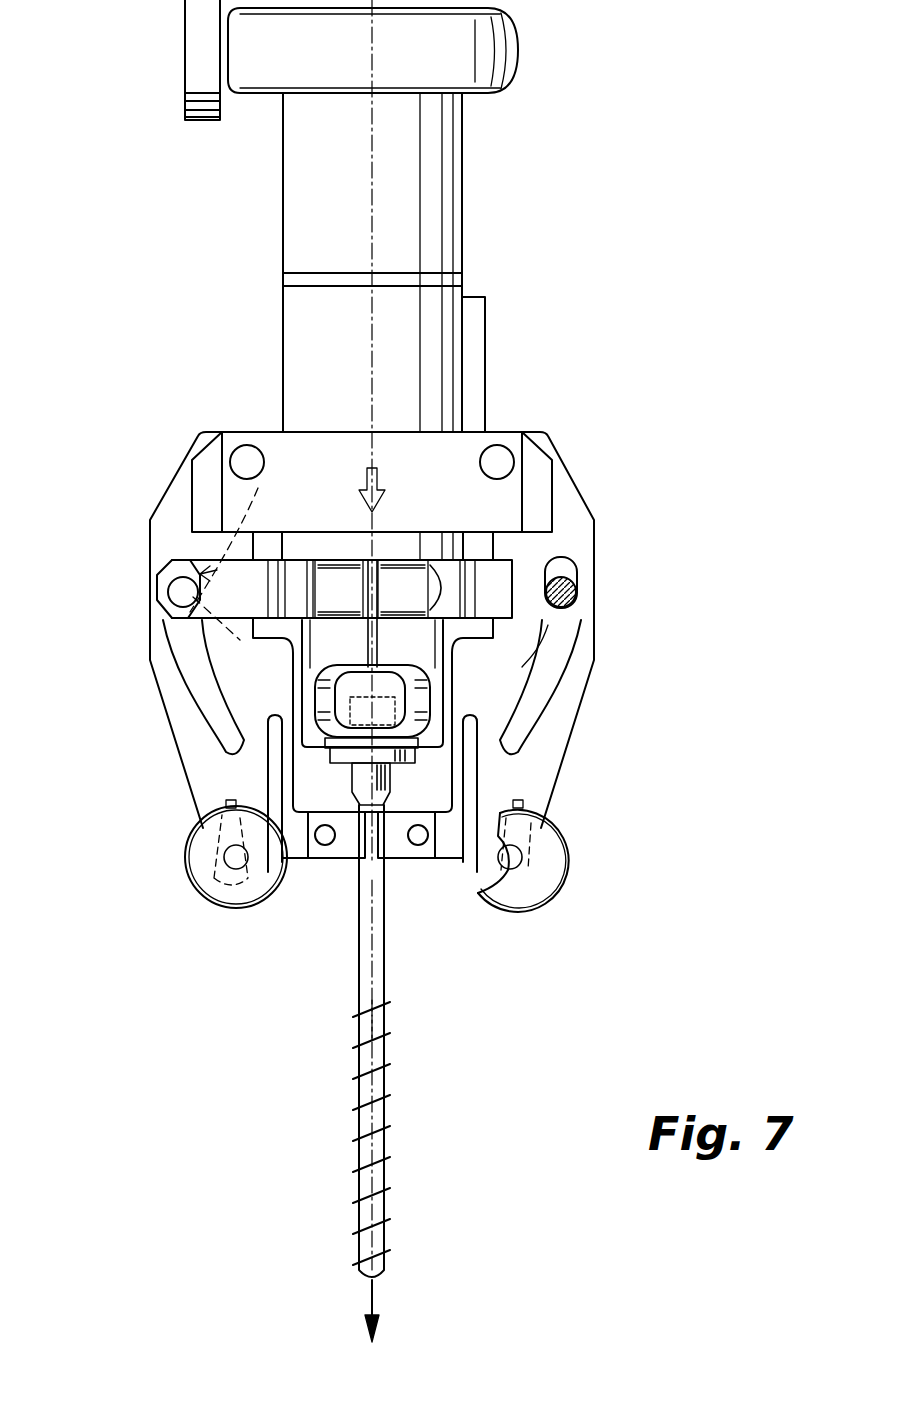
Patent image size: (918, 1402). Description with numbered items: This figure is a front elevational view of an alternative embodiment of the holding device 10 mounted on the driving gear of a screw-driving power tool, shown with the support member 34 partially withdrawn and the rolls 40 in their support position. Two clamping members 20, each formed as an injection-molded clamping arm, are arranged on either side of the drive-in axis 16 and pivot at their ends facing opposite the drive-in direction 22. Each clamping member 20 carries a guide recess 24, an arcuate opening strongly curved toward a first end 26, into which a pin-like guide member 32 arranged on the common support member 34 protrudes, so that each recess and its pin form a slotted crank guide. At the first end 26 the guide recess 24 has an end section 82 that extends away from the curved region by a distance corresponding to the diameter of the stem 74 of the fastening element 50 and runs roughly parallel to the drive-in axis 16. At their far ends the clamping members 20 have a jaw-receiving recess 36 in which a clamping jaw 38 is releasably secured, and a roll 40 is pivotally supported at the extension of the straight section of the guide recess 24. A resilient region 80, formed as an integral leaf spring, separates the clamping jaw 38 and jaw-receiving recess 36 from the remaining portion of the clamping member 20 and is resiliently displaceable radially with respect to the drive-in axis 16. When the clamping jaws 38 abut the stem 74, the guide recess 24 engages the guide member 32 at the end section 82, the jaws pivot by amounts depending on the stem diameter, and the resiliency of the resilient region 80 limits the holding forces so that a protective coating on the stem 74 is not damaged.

The holding device 10 is at (605, 399).
The drive-in axis 16 is at (388, 1020).
The clamping member 20 is at (597, 652).
The drive-in direction 22 is at (375, 1296).
The guide recess 24 is at (530, 664).
The end of guide recess 26 is at (183, 558).
The guide member 32 is at (180, 594).
The support member 34 is at (482, 588).
The jaw-receiving recess 36 is at (440, 862).
The clamping jaw 38 is at (348, 852).
The roll 40 is at (237, 895).
The fastening element 50 is at (388, 1112).
The stem 74 is at (367, 980).
The resilient region 80 is at (278, 775).
The end section 82 is at (684, 543).